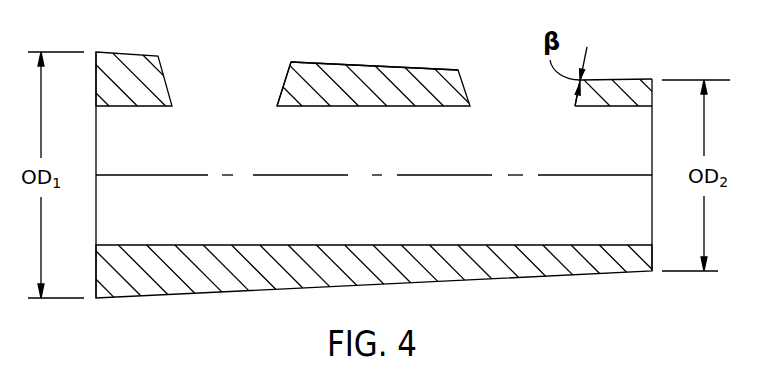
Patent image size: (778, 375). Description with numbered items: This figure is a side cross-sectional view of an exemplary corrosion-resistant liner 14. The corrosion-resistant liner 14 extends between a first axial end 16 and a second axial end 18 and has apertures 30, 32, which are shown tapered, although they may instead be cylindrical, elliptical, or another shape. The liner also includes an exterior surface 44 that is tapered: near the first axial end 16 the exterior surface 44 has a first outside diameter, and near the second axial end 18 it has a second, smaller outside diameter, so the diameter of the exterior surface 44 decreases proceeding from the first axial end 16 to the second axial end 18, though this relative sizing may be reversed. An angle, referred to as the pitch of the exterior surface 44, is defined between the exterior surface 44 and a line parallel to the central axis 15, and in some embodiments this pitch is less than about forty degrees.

The corrosion-resistant liner 14 is at (416, 79).
The central axis 15 is at (342, 180).
The first axial end 16 is at (96, 211).
The second axial end 18 is at (652, 205).
The aperture 30 is at (280, 95).
The aperture 32 is at (582, 92).
The exterior surface 44 is at (321, 63).